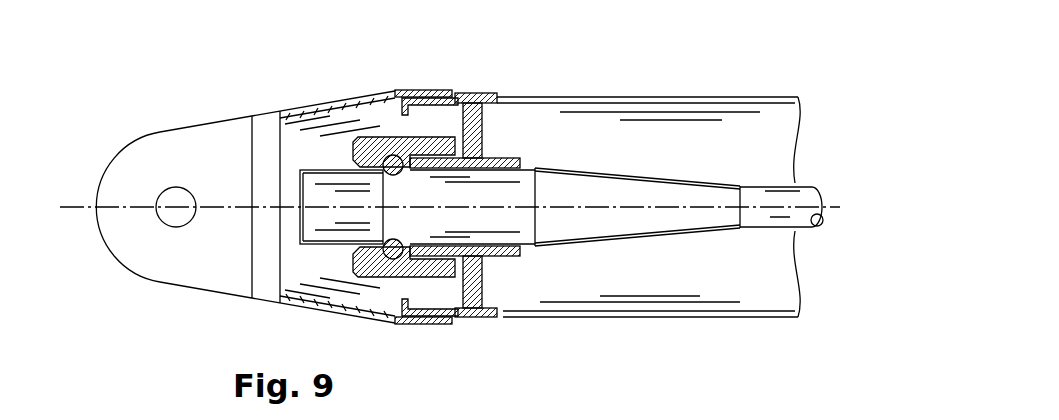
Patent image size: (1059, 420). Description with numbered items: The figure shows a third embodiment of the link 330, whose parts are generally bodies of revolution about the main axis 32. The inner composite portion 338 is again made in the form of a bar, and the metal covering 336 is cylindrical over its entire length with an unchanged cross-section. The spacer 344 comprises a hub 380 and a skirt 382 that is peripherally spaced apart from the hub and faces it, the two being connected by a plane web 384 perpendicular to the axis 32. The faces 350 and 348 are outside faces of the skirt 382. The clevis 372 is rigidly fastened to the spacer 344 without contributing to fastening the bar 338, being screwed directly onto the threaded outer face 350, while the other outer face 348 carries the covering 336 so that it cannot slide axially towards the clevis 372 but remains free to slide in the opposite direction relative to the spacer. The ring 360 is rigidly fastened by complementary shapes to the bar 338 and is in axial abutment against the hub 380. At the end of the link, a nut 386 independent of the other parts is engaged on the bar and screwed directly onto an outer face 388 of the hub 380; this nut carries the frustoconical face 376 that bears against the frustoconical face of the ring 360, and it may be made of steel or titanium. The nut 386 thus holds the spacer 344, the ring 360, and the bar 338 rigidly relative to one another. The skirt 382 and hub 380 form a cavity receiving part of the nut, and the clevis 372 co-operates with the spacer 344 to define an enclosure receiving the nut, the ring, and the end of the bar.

The link 330 is at (566, 38).
The main axis 32 is at (75, 209).
The clevis 372 is at (222, 150).
The threaded outer face 350 is at (415, 84).
The outer face of the hub 388 is at (436, 266).
The outer face 348 is at (488, 85).
The skirt 382 is at (472, 95).
The plane web 384 is at (481, 283).
The spacer 344 is at (492, 125).
The metal covering 336 is at (676, 85).
The hub 380 is at (520, 154).
The inner composite portion 338 is at (671, 184).
The frustoconical face 376 is at (373, 186).
The ring 360 is at (386, 146).
The nut 386 is at (377, 289).